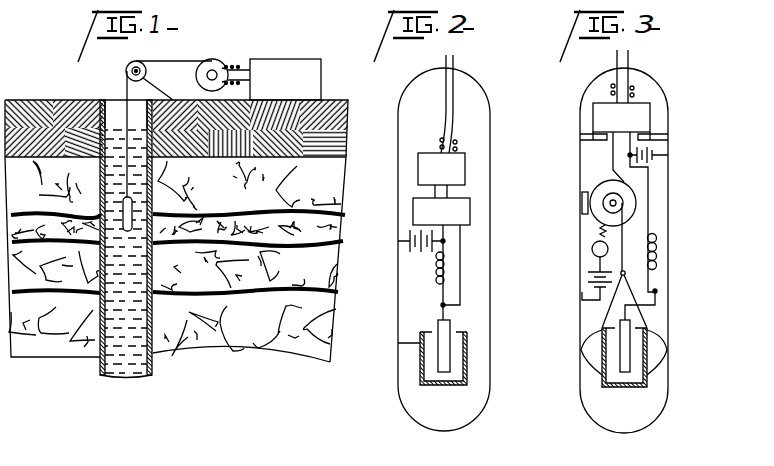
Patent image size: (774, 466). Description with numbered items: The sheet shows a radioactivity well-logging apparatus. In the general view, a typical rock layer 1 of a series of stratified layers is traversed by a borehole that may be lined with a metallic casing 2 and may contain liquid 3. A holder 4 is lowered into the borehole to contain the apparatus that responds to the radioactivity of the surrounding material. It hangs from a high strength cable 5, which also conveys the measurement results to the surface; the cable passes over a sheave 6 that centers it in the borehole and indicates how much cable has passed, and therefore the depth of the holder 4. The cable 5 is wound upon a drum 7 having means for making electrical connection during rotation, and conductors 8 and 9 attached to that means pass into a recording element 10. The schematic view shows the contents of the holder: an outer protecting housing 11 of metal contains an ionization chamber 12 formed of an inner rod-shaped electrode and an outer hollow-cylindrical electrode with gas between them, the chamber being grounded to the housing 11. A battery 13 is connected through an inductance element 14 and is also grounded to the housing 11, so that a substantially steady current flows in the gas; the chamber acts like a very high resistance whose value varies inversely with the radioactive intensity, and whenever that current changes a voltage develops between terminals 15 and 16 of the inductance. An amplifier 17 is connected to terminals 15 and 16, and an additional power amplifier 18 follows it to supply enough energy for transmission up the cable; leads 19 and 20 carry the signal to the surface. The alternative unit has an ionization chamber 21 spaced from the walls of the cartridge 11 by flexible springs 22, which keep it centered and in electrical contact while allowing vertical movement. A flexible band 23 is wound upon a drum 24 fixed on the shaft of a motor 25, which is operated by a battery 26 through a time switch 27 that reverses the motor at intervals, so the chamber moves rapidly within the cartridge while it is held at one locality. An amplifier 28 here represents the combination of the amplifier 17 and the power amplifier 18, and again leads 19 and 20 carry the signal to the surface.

In FIG. 1, the rock layer 1 is at (315, 196).
In FIG. 1, the metallic casing 2 is at (98, 372).
In FIG. 1, the liquid 3 is at (133, 320).
In FIG. 1, the holder 4 is at (154, 169).
In FIG. 1, the high strength cable 5 is at (123, 92).
In FIG. 1, the sheave 6 is at (126, 72).
In FIG. 1, the drum 7 is at (212, 60).
In FIG. 1, the conductor 8 is at (238, 69).
In FIG. 1, the conductor 9 is at (244, 84).
In FIG. 1, the recording element 10 is at (287, 28).
In FIG. 2, the outer protecting housing 11 is at (489, 225).
In FIG. 3, the outer protecting housing 11 is at (668, 207).
In FIG. 2, the ionization chamber 12 is at (387, 385).
In FIG. 2, the battery 13 is at (415, 252).
In FIG. 2, the inductance element 14 is at (437, 274).
In FIG. 2, the terminal 15 is at (461, 295).
In FIG. 2, the terminal 16 is at (445, 245).
In FIG. 2, the amplifier 17 is at (495, 143).
In FIG. 2, the additional amplifier 18 is at (465, 165).
In FIG. 2, the lead 19 is at (457, 78).
In FIG. 3, the lead 19 is at (630, 58).
In FIG. 2, the lead 20 is at (446, 62).
In FIG. 3, the lead 20 is at (617, 60).
In FIG. 3, the ionization chamber 21 is at (645, 372).
In FIG. 3, the flexible springs 22 is at (668, 345).
In FIG. 3, the flexible band 23 is at (652, 272).
In FIG. 3, the drum 24 is at (603, 202).
In FIG. 3, the motor 25 is at (600, 187).
In FIG. 3, the battery 26 is at (587, 278).
In FIG. 3, the time switch 27 is at (592, 248).
In FIG. 3, the amplifier 28 is at (648, 112).